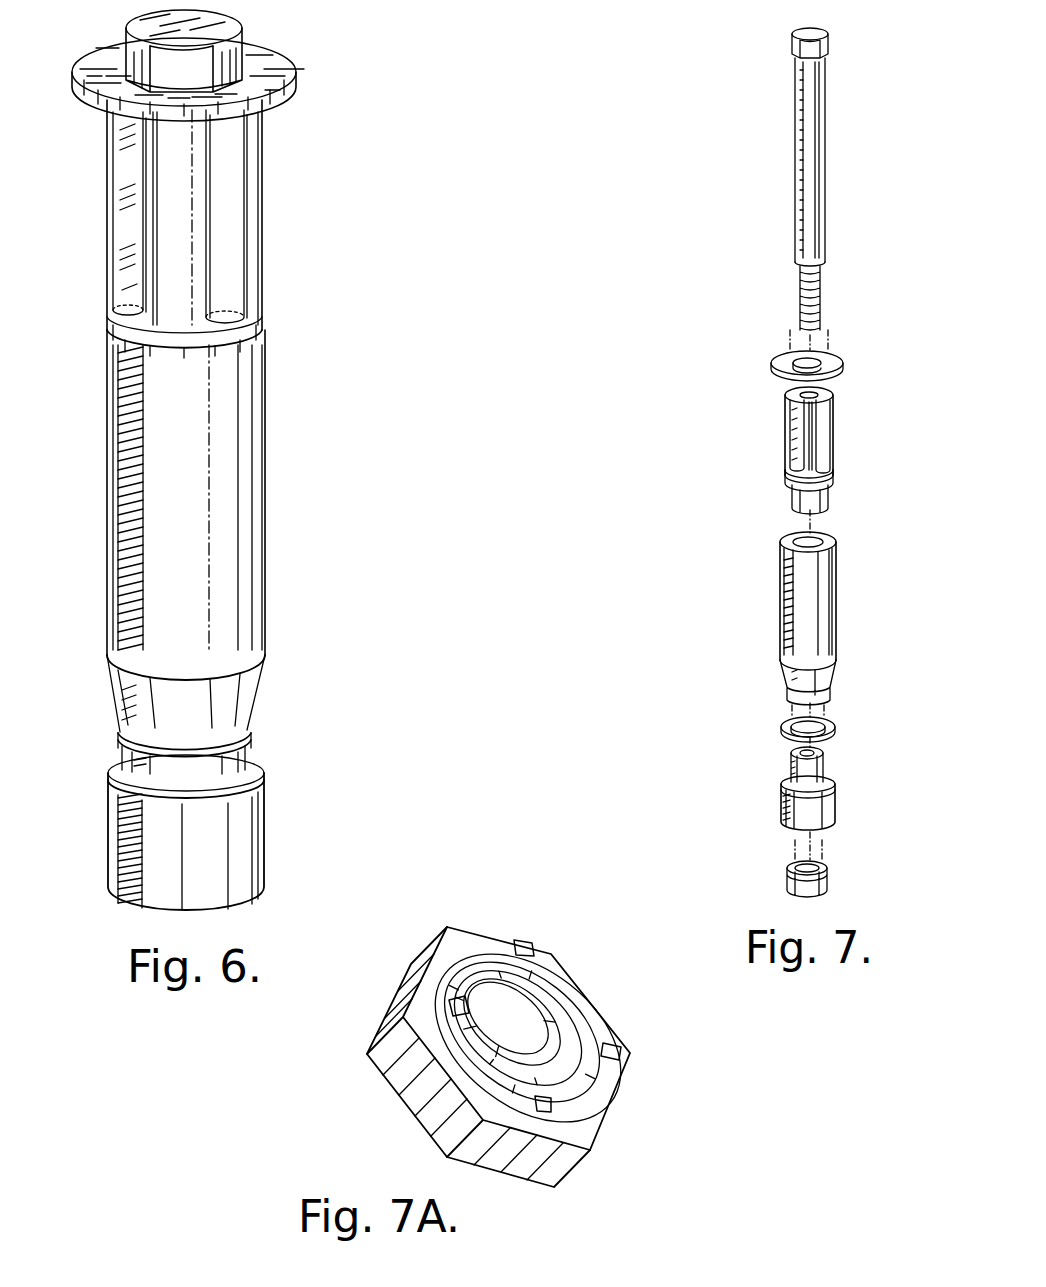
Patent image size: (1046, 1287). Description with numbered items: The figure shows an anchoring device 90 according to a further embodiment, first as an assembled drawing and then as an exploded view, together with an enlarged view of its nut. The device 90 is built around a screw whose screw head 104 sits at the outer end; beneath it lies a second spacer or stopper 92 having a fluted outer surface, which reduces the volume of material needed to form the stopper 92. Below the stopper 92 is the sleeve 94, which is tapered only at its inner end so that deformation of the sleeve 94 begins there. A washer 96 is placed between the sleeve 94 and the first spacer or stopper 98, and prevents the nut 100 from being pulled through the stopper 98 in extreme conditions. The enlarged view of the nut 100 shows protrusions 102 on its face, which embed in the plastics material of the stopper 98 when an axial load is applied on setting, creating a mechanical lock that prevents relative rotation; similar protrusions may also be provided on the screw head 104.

In FIG. 6, the anchoring device 90 is at (305, 48).
In FIG. 7, the anchoring device 90 is at (838, 183).
In FIG. 6, the second spacer or stopper 92 is at (235, 260).
In FIG. 7, the second spacer or stopper 92 is at (838, 447).
In FIG. 6, the sleeve 94 is at (210, 537).
In FIG. 7, the sleeve 94 is at (812, 613).
In FIG. 6, the washer 96 is at (250, 733).
In FIG. 7, the washer 96 is at (781, 727).
In FIG. 6, the first spacer or stopper 98 is at (263, 806).
In FIG. 7, the first spacer or stopper 98 is at (838, 803).
In FIG. 7, the nut 100 is at (833, 878).
In FIG. 7A, the nut 100 is at (575, 975).
In FIG. 7A, the protrusions 102 is at (520, 940).
In FIG. 7, the screw head 104 is at (828, 35).